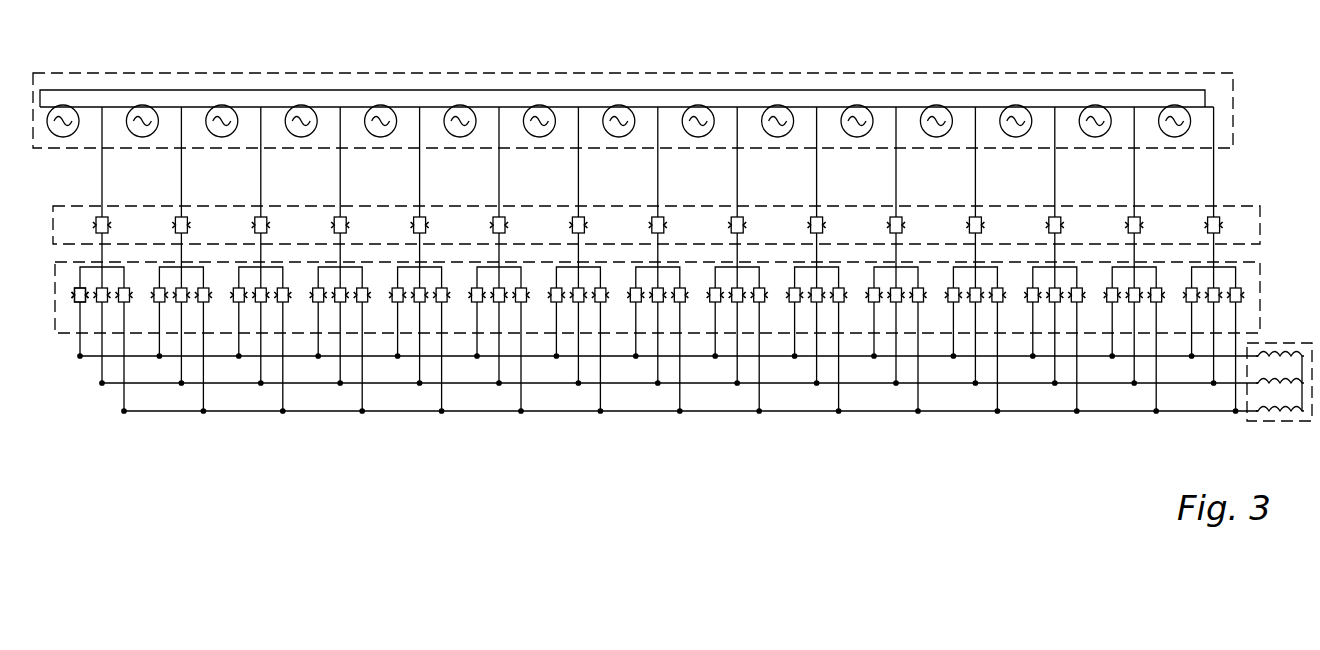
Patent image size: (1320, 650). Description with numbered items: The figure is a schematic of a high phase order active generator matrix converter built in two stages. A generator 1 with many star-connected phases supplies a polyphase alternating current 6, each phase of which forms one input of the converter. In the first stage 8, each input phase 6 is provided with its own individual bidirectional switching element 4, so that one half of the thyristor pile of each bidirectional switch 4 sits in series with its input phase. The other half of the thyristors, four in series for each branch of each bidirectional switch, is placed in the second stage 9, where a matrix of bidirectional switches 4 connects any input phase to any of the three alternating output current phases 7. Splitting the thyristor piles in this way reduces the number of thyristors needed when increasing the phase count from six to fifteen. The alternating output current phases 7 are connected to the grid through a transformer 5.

The generator 1 is at (1240, 96).
The bidirectional switch 4 is at (74, 295).
The transformer 5 is at (1252, 424).
The polyphase alternating current 6 is at (1227, 176).
The alternating output current phases 7 is at (133, 360).
The first stage 8 is at (1262, 225).
The second stage 9 is at (1262, 291).